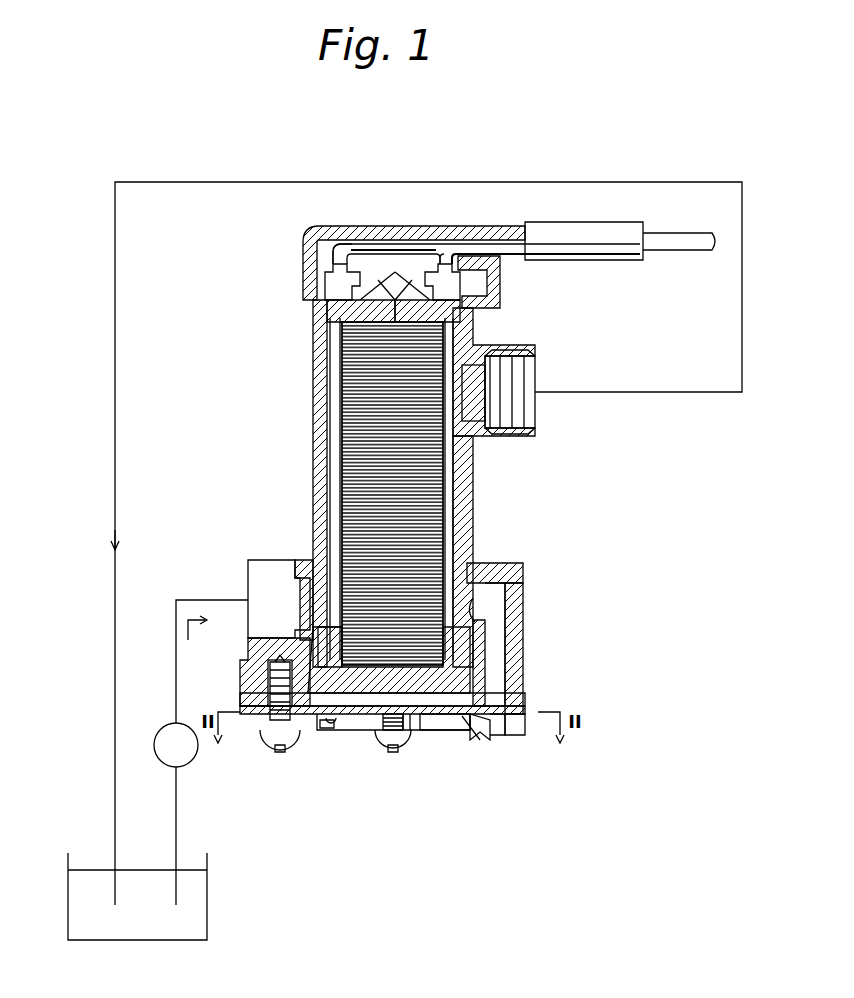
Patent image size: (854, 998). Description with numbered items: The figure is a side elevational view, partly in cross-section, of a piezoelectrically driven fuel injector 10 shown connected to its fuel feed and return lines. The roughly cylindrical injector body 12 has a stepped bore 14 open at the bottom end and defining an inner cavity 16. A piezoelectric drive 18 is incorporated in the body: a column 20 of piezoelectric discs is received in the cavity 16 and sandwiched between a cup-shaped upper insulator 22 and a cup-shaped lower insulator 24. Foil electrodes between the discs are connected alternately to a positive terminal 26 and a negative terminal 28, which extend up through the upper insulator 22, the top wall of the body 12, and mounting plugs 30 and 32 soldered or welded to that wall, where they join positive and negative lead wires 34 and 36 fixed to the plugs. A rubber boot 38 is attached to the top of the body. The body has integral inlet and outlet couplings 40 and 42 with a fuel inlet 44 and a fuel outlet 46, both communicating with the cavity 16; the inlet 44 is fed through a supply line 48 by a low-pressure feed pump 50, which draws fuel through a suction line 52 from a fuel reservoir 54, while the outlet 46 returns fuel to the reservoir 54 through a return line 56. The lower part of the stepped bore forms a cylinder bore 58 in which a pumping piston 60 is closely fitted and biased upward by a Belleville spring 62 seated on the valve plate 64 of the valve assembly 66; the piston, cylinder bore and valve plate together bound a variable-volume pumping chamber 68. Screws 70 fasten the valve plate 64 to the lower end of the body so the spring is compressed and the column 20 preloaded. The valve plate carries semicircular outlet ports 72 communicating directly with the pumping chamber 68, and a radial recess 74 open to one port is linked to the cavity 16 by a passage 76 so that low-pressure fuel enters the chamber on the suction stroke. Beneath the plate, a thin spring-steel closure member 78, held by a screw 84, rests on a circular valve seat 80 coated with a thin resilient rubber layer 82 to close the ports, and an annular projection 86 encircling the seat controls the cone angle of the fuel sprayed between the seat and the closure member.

The injector 10 is at (256, 500).
The injector body 12 is at (468, 468).
The stepped bore 14 is at (328, 458).
The inner cavity 16 is at (330, 430).
The piezoelectric drive 18 is at (462, 500).
The piezoelectric column 20 is at (340, 394).
The upper insulator 22 is at (395, 298).
The lower insulator 24 is at (405, 668).
The positive terminal 26 is at (328, 310).
The negative terminal 28 is at (463, 314).
The mounting plug 30 is at (320, 288).
The mounting plug 32 is at (478, 296).
The positive lead wire 34 is at (343, 250).
The negative lead wire 36 is at (450, 258).
The rubber boot 38 is at (612, 236).
The inlet coupling 40 is at (290, 560).
The outlet coupling 42 is at (520, 432).
The fuel inlet 44 is at (250, 580).
The fuel outlet 46 is at (535, 372).
The supply line 48 is at (176, 655).
The low-pressure feed pump 50 is at (166, 766).
The suction line 52 is at (176, 838).
The fuel reservoir 54 is at (150, 941).
The return line 56 is at (692, 392).
The cylinder bore 58 is at (500, 585).
The pumping piston 60 is at (485, 625).
The Belleville spring 62 is at (480, 702).
The valve plate 64 is at (528, 722).
The valve assembly 66 is at (320, 768).
The pumping chamber 68 is at (436, 702).
The screws 70 is at (268, 748).
The outlet ports 72 is at (365, 730).
The radial recess 74 is at (500, 735).
The passage 76 is at (500, 650).
The closure member 78 is at (342, 730).
The valve seat 80 is at (480, 740).
The resilient material layer 82 is at (330, 722).
The screw 84 is at (388, 732).
The annular projection 86 is at (478, 740).